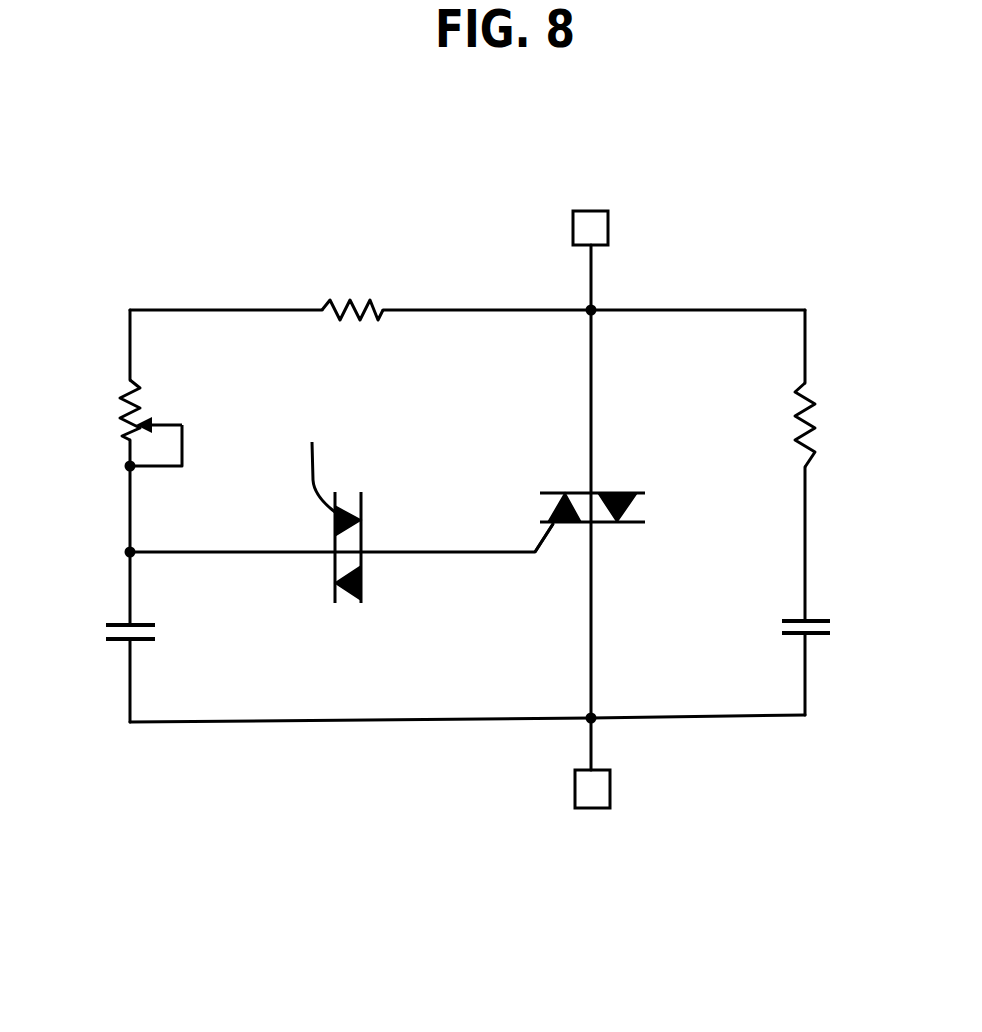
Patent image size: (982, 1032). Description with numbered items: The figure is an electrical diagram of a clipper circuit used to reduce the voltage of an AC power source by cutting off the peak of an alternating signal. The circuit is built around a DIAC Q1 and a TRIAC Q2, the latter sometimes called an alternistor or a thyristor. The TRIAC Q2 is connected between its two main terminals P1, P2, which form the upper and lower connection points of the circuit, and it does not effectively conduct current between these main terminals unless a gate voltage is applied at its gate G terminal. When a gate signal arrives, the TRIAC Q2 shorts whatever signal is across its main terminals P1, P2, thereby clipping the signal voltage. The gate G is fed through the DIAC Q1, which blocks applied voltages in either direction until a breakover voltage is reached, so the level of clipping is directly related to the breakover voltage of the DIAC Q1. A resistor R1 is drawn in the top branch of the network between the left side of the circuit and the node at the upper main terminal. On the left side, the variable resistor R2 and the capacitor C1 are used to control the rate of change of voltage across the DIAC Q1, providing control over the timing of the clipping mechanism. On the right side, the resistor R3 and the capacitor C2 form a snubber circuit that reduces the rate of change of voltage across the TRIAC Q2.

The main terminal P1 is at (591, 199).
The main terminal P2 is at (590, 821).
The resistor R1 is at (352, 298).
The variable resistor R2 is at (131, 423).
The resistor R3 is at (828, 425).
The capacitor C1 is at (110, 619).
The capacitor C2 is at (821, 609).
The DIAC Q1 is at (356, 522).
The TRIAC Q2 is at (592, 489).
The gate terminal G is at (541, 558).